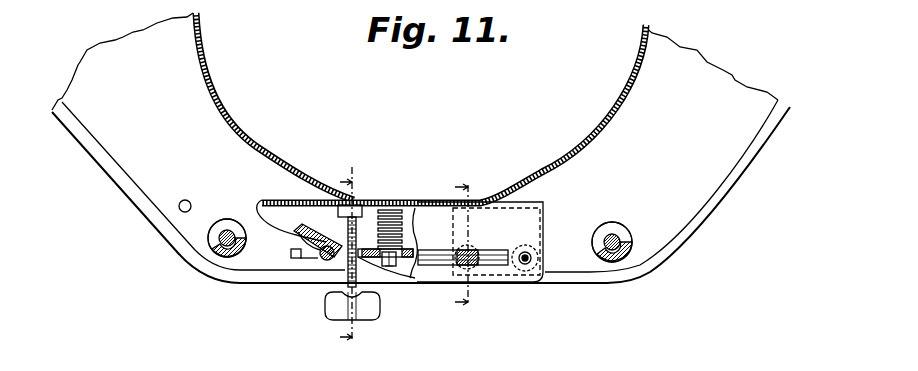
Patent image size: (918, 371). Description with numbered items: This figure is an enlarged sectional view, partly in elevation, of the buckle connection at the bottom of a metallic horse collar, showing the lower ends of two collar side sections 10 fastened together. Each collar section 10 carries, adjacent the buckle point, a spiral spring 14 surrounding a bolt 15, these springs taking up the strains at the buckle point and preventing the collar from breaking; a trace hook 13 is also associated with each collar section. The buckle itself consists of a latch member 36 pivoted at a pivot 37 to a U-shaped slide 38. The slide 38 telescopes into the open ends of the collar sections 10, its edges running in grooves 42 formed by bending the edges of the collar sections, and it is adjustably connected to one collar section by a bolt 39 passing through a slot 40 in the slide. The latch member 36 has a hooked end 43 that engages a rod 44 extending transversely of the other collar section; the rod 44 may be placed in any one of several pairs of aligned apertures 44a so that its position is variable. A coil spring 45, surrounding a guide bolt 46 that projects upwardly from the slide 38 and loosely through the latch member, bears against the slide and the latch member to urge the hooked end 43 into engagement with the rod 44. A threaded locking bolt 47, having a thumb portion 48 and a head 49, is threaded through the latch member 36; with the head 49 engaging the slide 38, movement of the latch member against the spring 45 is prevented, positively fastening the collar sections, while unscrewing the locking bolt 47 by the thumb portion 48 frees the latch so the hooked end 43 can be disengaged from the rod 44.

The collar side section 10 is at (205, 97).
The trace hook 13 is at (356, 256).
The spiral spring 14 is at (210, 288).
The bolt 15 is at (225, 222).
The latch member 36 is at (403, 262).
The pivot 37 is at (526, 266).
The slide 38 is at (545, 212).
The bolt 39 is at (456, 268).
The slot 40 is at (490, 266).
The grooves 42 is at (147, 217).
The hooked end 43 is at (310, 258).
The rod 44 is at (326, 261).
The aligned apertures 44a is at (289, 259).
The coil spring 45 is at (403, 217).
The guide bolt 46 is at (390, 267).
The locking bolt 47 is at (347, 222).
The thumb portion 48 is at (336, 314).
The head 49 is at (362, 200).